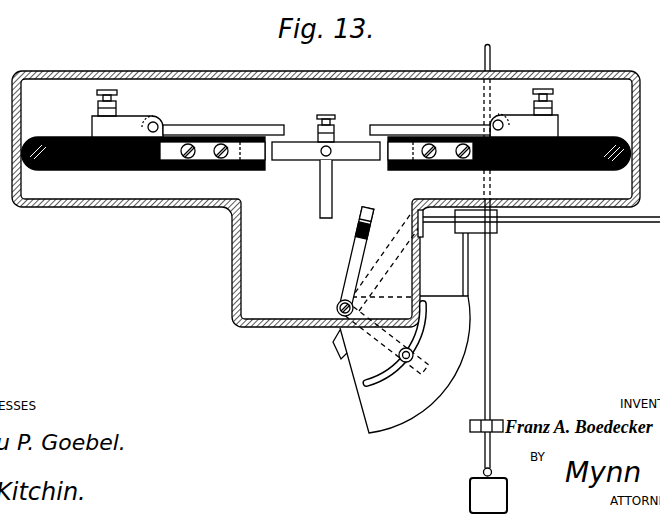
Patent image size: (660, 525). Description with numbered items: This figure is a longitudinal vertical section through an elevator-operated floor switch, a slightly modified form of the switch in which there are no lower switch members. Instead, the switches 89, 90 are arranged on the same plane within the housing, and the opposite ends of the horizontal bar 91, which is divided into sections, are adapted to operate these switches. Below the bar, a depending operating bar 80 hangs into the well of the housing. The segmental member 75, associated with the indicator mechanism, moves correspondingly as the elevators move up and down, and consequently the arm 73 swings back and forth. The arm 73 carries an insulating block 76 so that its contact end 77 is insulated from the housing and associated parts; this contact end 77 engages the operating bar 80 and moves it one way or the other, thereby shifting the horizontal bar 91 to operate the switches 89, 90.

The arm 73 is at (352, 270).
The segmental member 75 is at (397, 415).
The insulating block 76 is at (357, 231).
The contact end 77 is at (370, 210).
The depending operating bar 80 is at (320, 211).
The switch 89 is at (382, 126).
The switch 90 is at (232, 125).
The horizontal bar 91 is at (297, 147).